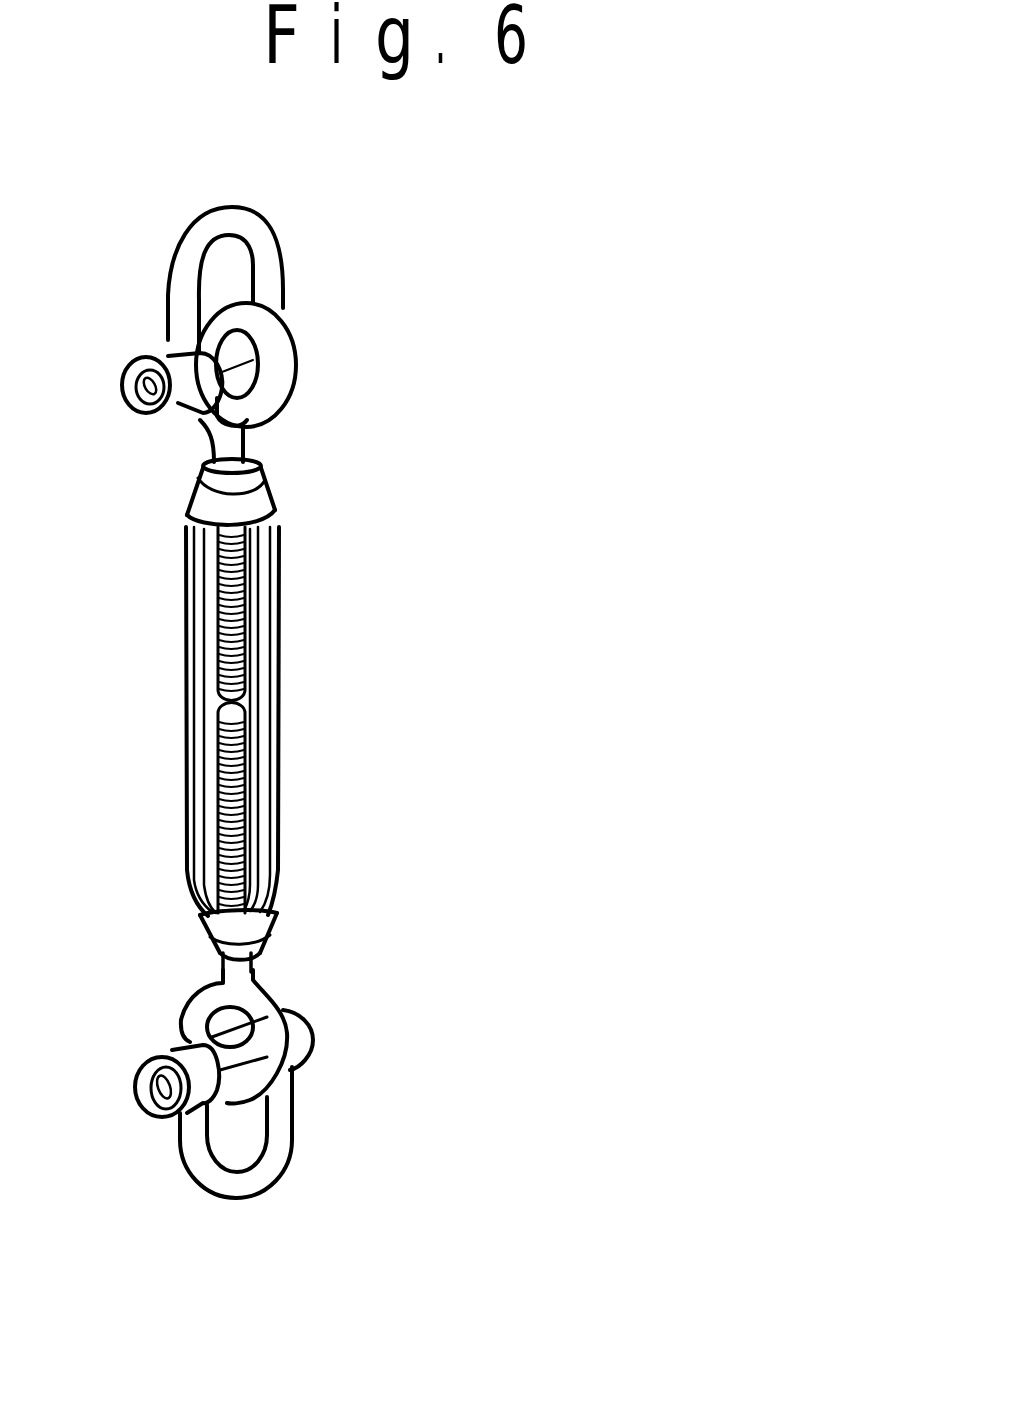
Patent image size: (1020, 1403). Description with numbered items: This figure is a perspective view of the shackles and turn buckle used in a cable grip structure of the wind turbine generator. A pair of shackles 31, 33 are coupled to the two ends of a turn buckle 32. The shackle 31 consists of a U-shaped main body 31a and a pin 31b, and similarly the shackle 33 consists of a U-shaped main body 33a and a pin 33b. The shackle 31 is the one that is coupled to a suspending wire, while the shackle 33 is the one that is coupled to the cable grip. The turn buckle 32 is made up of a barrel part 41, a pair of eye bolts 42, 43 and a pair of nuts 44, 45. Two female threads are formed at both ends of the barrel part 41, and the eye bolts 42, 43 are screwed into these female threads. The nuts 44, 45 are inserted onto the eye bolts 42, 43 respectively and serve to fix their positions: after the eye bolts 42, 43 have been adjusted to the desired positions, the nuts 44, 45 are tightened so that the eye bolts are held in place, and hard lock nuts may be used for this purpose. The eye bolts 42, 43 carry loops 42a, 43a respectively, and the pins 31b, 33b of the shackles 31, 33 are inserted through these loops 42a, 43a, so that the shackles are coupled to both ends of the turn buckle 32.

The shackle 31 is at (315, 252).
The U-shaped main body 31a is at (218, 220).
The pin 31b is at (140, 357).
The turn buckle 32 is at (322, 628).
The shackle 33 is at (328, 1137).
The U-shaped main body 33a is at (233, 1197).
The pin 33b is at (157, 1115).
The barrel part 41 is at (278, 704).
The eye bolt 42 is at (273, 377).
The loop 42a is at (235, 378).
The eye bolt 43 is at (277, 1038).
The loop 43a is at (230, 1028).
The nut 44 is at (200, 479).
The nut 45 is at (207, 943).